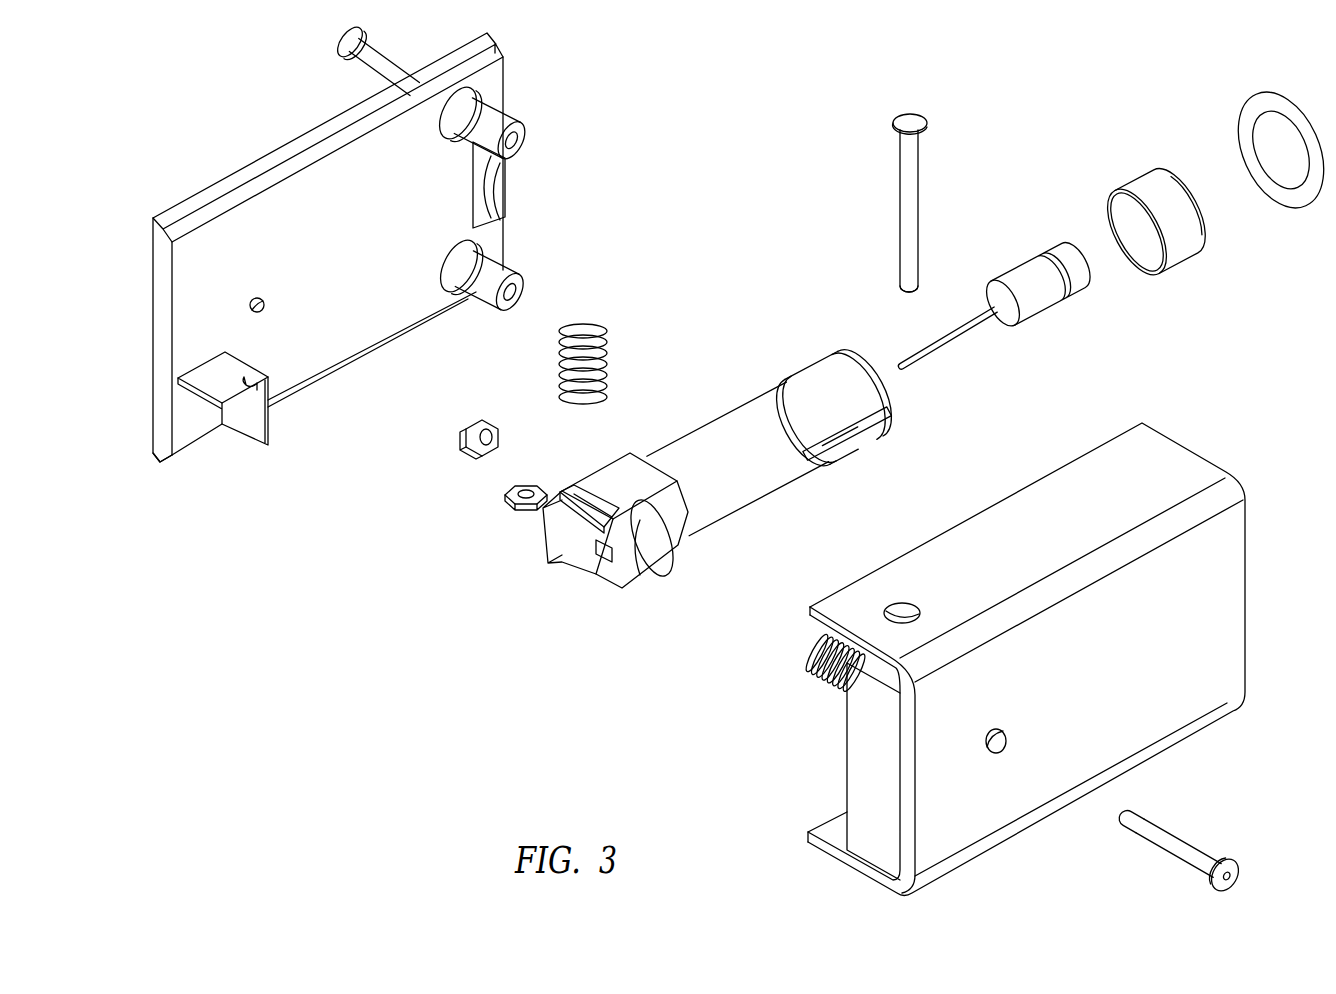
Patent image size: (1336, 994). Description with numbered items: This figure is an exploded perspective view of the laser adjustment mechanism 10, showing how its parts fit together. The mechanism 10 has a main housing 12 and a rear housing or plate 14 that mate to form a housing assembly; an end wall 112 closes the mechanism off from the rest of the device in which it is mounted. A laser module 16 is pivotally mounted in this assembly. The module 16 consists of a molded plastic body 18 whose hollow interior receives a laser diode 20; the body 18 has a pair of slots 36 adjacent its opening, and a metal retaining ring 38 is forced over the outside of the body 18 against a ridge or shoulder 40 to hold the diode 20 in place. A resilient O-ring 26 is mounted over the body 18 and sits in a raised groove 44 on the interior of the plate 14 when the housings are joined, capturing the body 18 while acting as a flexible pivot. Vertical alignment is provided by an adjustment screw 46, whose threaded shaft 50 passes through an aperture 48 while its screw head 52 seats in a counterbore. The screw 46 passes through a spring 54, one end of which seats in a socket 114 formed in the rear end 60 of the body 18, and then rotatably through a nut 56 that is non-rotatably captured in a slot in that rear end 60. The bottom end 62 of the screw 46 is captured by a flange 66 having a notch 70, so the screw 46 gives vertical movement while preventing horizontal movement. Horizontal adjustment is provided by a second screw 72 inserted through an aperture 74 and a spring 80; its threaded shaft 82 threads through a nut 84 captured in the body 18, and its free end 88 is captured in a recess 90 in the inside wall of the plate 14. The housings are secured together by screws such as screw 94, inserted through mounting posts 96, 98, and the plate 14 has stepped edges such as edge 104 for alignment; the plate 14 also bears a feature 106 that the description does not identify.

The laser adjustment mechanism 10 is at (731, 155).
The main housing 12 is at (1105, 678).
The rear housing or plate 14 is at (362, 251).
The laser module 16 is at (760, 492).
The module body 18 is at (718, 427).
The laser diode 20 is at (1043, 312).
The O-ring 26 is at (1290, 197).
The slots 36 is at (855, 440).
The retaining ring 38 is at (1180, 250).
The ridge or shoulder 40 is at (800, 376).
The raised groove 44 is at (492, 193).
The vertical adjustment screw 46 is at (945, 169).
The aperture 48 is at (905, 608).
The threaded shaft 50 is at (910, 213).
The screw head 52 is at (905, 113).
The spring 54 is at (592, 325).
The nut 56 is at (510, 506).
The rear end of the body 60 is at (624, 474).
The bottom end of the screw 62 is at (900, 292).
The flange 66 is at (215, 364).
The notch 70 is at (254, 379).
The horizontal adjustment screw 72 is at (1210, 819).
The aperture 74 is at (1006, 748).
The spring 80 is at (812, 642).
The threaded shaft 82 is at (1172, 847).
The nut 84 is at (480, 456).
The free end of the screw 88 is at (1122, 815).
The recess 90 is at (265, 304).
The screw 94 is at (385, 47).
The mounting post 96 is at (470, 297).
The mounting post 98 is at (508, 106).
The stepped edge 104 is at (173, 462).
The rail 106 is at (190, 213).
The end wall 112 is at (858, 738).
The socket 114 is at (590, 496).